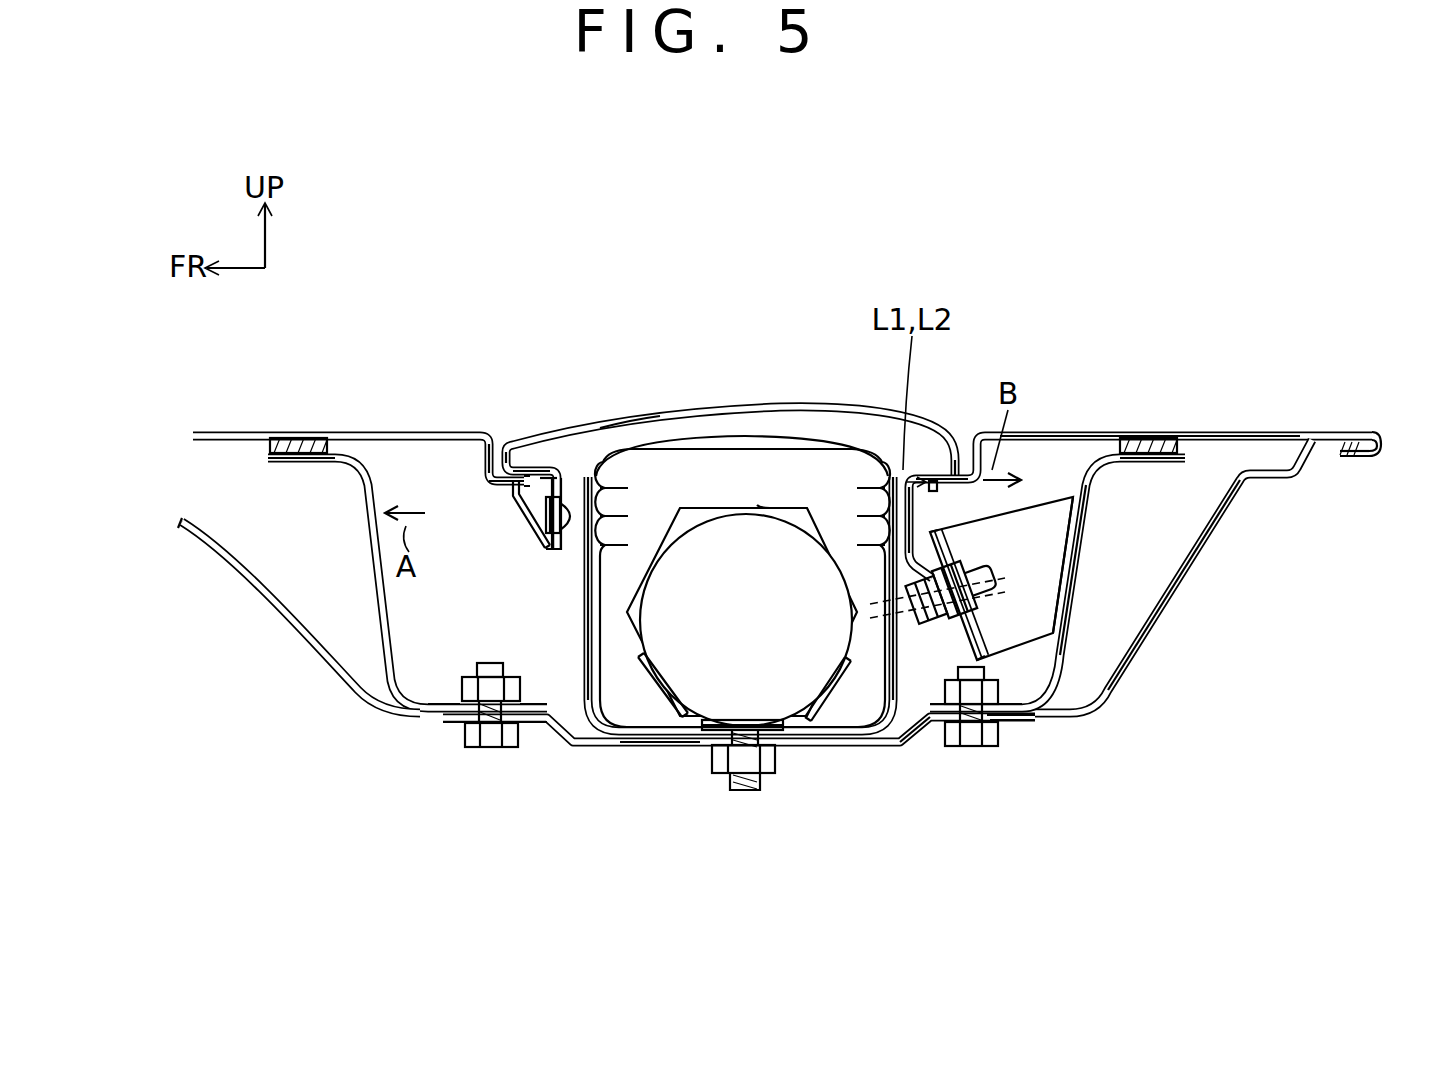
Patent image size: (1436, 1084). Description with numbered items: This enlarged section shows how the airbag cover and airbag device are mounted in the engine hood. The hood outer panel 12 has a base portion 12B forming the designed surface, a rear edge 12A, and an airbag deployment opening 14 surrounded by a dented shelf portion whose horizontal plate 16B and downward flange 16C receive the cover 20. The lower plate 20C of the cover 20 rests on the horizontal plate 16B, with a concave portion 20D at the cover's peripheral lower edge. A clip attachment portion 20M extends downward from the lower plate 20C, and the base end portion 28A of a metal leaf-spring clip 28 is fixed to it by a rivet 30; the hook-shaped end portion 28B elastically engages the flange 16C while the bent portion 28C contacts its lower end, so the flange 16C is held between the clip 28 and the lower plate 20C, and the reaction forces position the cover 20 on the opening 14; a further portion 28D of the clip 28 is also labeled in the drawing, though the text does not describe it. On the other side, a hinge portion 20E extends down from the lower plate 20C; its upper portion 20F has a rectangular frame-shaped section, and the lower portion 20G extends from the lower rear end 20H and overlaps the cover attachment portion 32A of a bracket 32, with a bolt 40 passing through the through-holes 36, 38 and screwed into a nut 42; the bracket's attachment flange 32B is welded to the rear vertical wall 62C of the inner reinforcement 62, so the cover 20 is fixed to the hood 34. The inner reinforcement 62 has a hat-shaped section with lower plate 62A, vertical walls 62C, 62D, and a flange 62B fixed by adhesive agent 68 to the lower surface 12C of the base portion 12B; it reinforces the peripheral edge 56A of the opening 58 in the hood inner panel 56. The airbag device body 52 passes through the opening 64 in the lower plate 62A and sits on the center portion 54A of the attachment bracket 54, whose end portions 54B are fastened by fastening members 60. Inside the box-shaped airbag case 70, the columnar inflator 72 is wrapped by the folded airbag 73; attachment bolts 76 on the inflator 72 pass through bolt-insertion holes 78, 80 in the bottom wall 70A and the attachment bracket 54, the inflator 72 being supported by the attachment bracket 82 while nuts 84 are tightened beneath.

The hood outer panel 12 is at (1234, 412).
The rear edge 12A is at (1375, 440).
The base portion 12B is at (1118, 433).
The lower surface 12C is at (1264, 477).
The airbag deployment opening 14 is at (541, 486).
The horizontal plate 16B is at (470, 478).
The flange 16C is at (500, 484).
The cover 20 is at (783, 394).
The lower plate 20C is at (523, 468).
The concave portion 20D is at (516, 456).
The hinge portion 20E is at (887, 512).
The upper portion 20F is at (915, 506).
The lower portion 20G is at (950, 638).
The lower rear end 20H is at (945, 536).
The clip attachment portion 20M is at (636, 425).
The clip 28 is at (522, 556).
The base end portion 28A is at (557, 497).
The end portion 28B is at (548, 490).
The bent portion 28C is at (514, 502).
The bracket nut 28D is at (552, 552).
The rivet 30 is at (545, 515).
The bracket 32 is at (1058, 660).
The cover attachment portion 32A is at (955, 556).
The attachment flange 32B is at (1057, 520).
The hood 34 is at (300, 408).
The through-hole 36 is at (870, 618).
The through-hole 38 is at (990, 598).
The bolt 40 is at (856, 600).
The nut 42 is at (988, 628).
The airbag device body 52 is at (576, 665).
The attachment bracket 54 is at (834, 758).
The center portion 54A is at (664, 746).
The end portions 54B is at (452, 722).
The hood inner panel 56 is at (1207, 570).
The peripheral edge 56A is at (932, 722).
The opening 58 is at (892, 735).
The fastening members 60 is at (490, 747).
The inner reinforcement 62 is at (1094, 598).
The lower plate 62A is at (450, 700).
The flange 62B is at (305, 463).
The vertical wall 62C is at (1090, 550).
The vertical wall 62D is at (368, 540).
The opening 64 is at (890, 692).
The adhesive agent 68 is at (268, 447).
The airbag case 70 is at (584, 610).
The bottom wall 70A is at (648, 718).
The inflator 72 is at (716, 508).
The airbag 73 is at (735, 436).
The attachment bolts 76 is at (745, 790).
The bolt-insertion hole 78 is at (724, 718).
The bolt-insertion hole 80 is at (752, 718).
The attachment bracket 82 is at (758, 505).
The nuts 84 is at (775, 770).